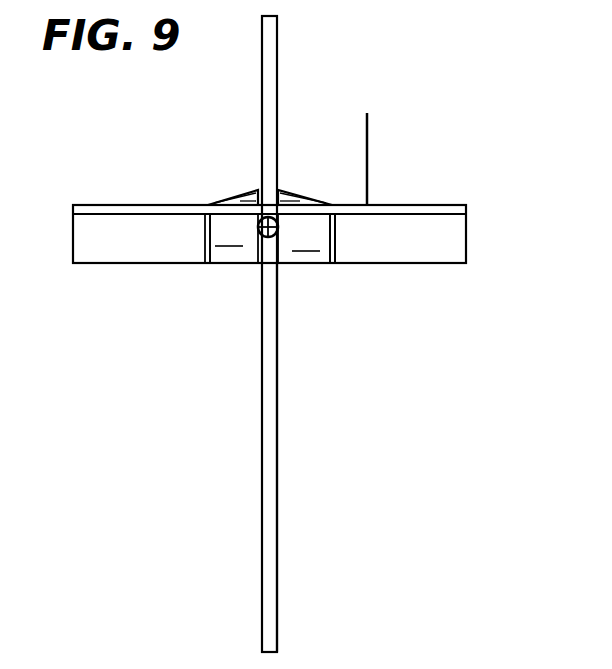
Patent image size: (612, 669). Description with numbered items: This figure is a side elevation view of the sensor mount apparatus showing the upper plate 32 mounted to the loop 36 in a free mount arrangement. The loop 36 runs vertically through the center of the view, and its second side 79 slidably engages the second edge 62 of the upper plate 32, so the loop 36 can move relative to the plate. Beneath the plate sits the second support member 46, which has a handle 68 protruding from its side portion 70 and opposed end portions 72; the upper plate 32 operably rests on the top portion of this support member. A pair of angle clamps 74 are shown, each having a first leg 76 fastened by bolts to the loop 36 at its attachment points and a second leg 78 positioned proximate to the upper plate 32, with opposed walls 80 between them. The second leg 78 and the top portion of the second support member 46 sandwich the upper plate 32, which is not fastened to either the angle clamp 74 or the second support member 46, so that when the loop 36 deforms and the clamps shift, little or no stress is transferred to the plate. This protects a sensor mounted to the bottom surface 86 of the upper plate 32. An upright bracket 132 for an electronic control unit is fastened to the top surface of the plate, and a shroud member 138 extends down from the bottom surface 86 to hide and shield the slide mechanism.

The upper plate 32 is at (441, 207).
The loop 36 is at (278, 545).
The second support member 46 is at (300, 267).
The second edge 62 is at (110, 202).
The handle 68 is at (261, 235).
The side portion 70 is at (270, 238).
The opposed end portions 72 is at (205, 240).
The angle clamp 74 is at (232, 187).
The first leg 76 is at (244, 200).
The second leg 78 is at (209, 204).
The second side 79 is at (279, 450).
The opposed walls 80 is at (228, 196).
The bottom surface 86 is at (395, 222).
The upright bracket 132 is at (370, 122).
The shroud member 138 is at (450, 234).